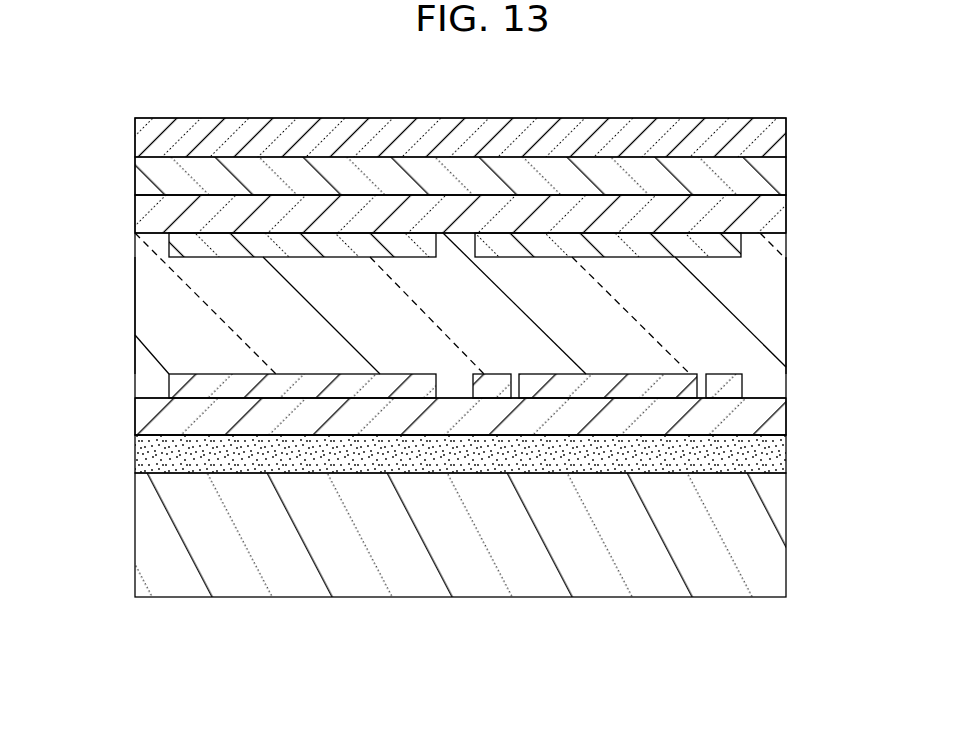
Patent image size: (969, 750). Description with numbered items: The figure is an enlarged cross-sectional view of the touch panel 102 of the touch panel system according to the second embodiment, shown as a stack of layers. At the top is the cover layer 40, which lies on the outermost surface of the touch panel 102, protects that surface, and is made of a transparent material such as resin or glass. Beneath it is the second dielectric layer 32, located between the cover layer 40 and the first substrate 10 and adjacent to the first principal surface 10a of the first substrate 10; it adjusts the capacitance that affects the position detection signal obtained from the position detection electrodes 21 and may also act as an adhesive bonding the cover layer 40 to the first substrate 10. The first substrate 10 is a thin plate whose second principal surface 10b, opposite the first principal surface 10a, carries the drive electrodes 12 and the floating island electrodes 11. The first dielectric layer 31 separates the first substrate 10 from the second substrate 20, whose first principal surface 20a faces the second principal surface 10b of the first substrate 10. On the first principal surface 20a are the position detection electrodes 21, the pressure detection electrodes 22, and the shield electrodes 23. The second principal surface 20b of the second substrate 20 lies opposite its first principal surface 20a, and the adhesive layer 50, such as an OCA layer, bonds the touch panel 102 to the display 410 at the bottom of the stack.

The cover layer 40 is at (766, 131).
The second dielectric layer 32 is at (769, 170).
The first substrate 10 is at (769, 210).
The first principal surface 10a is at (168, 194).
The second principal surface 10b is at (150, 234).
The floating island electrodes 11 is at (365, 247).
The drive electrodes 12 is at (646, 246).
The first dielectric layer 31 is at (772, 316).
The second substrate 20 is at (769, 425).
The first principal surface 20a is at (150, 398).
The second principal surface 20b is at (167, 436).
The position detection electrodes 21 is at (312, 390).
The pressure detection electrodes 22 is at (605, 390).
The shield electrodes 23 is at (497, 390).
The adhesive layer 50 is at (769, 459).
The display 410 is at (769, 540).
The touch panel 102 is at (852, 118).